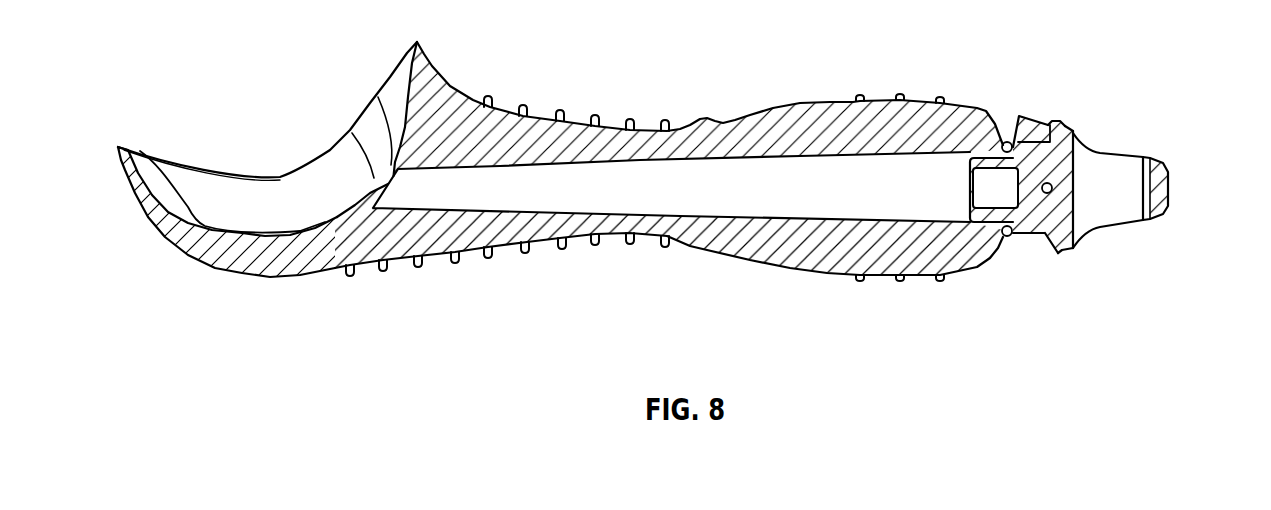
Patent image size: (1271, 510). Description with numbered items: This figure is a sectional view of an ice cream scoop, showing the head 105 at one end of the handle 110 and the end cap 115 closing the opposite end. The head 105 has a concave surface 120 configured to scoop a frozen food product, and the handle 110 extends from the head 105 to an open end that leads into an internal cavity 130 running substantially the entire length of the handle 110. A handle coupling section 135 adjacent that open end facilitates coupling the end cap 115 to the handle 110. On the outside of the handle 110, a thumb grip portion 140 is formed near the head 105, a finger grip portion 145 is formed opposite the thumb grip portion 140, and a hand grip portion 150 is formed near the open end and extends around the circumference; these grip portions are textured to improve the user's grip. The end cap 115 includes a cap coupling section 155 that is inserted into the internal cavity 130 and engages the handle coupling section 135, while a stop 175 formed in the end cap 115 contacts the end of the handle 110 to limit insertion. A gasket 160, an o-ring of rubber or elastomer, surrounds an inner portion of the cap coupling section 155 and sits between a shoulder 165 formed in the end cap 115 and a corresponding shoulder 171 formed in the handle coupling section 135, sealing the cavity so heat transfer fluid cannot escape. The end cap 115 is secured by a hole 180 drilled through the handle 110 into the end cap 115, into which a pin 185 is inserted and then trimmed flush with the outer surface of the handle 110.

The head 105 is at (187, 247).
The handle 110 is at (776, 124).
The end cap 115 is at (1170, 188).
The concave surface 120 is at (212, 185).
The internal cavity 130 is at (737, 190).
The handle coupling section 135 is at (1022, 118).
The thumb grip portion 140 is at (488, 100).
The finger grip portion 145 is at (457, 256).
The hand grip portion 150 is at (897, 278).
The cap coupling section 155 is at (1056, 252).
The gasket 160 is at (1008, 238).
The shoulder 165 is at (1070, 247).
The shoulder 171 is at (984, 112).
The stop 175 is at (1045, 122).
The hole 180 is at (1047, 177).
The pin 185 is at (1053, 190).